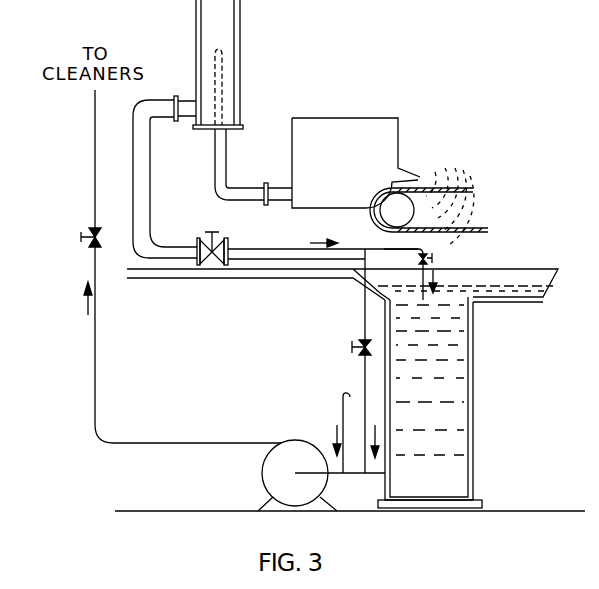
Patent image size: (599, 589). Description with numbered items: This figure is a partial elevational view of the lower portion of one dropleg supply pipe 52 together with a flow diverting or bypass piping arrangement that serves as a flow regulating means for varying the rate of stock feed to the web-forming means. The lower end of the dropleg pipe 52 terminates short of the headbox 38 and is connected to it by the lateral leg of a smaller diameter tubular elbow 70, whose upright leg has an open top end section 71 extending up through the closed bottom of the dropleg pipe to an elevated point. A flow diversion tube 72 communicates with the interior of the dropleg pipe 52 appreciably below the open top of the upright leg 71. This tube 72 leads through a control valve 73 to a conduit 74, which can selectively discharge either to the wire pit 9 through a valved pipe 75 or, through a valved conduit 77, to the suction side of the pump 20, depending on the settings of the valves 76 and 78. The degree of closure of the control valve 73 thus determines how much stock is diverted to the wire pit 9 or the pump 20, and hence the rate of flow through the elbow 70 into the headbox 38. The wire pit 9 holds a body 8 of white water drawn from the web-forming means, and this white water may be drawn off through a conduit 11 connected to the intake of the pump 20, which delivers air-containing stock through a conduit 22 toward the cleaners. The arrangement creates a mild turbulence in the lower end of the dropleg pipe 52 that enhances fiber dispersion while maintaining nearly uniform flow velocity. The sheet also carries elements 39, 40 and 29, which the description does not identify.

The dropleg pipe 52 is at (241, 22).
The open top end section of upright leg 71 is at (222, 60).
The tubular elbow 70 is at (227, 151).
The flow diversion tube 72 is at (150, 180).
The control valve 73 is at (219, 231).
The conduit 74 is at (265, 249).
The valved pipe 75 is at (384, 248).
The valve 76 is at (432, 258).
The valved conduit 77 is at (365, 306).
The valve 78 is at (352, 344).
The headbox 38 is at (348, 150).
The slice discharge 39 is at (421, 176).
The forming wire 40 is at (473, 186).
The body of white water 8 is at (445, 343).
The wire pit 9 is at (474, 378).
The conduit 22 is at (96, 350).
The pump 20 is at (262, 470).
The overflow pipe 29 is at (343, 405).
The conduit 11 is at (354, 477).